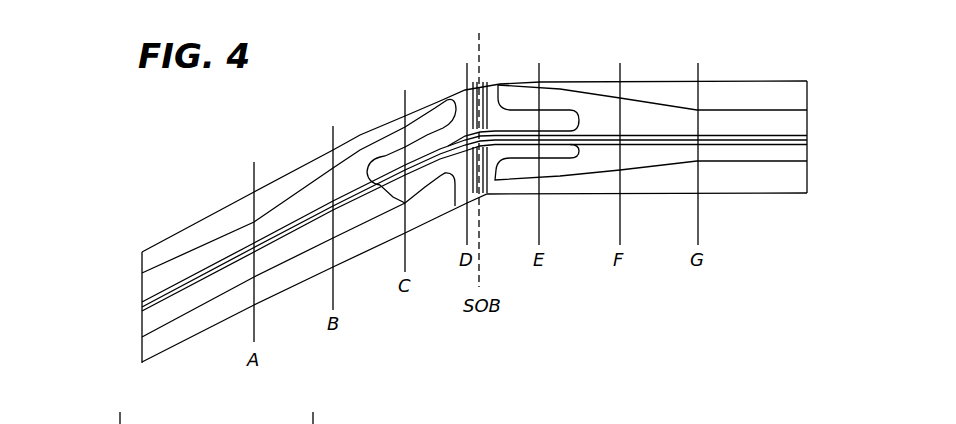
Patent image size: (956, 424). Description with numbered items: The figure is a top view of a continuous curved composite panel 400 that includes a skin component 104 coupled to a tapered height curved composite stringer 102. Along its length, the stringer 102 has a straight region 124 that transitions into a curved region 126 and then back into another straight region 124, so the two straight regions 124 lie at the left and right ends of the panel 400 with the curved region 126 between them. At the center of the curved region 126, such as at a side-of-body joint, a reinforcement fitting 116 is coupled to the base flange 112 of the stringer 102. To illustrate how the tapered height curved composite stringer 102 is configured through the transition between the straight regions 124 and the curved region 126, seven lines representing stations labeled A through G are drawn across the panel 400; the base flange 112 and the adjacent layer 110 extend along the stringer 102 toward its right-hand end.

The continuous curved composite panel 400 is at (122, 128).
The tapered height curved composite stringer 102 is at (150, 283).
The skin component 104 is at (150, 355).
The lower ply 110 is at (805, 139).
The base flange 112 is at (793, 120).
The reinforcement fitting 116 is at (495, 180).
The straight region 124 is at (268, 165).
The curved region 126 is at (688, 72).